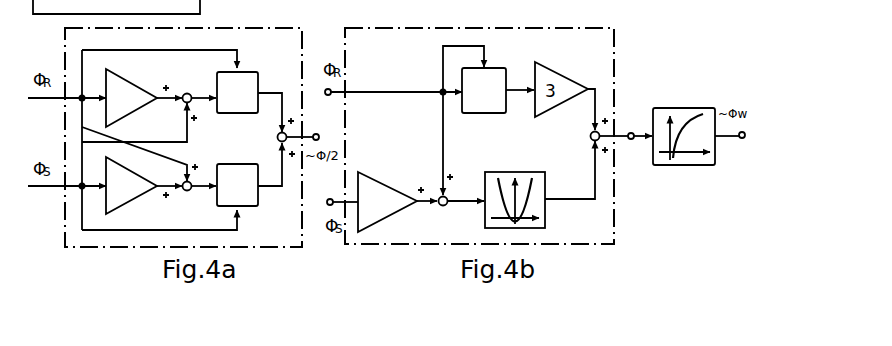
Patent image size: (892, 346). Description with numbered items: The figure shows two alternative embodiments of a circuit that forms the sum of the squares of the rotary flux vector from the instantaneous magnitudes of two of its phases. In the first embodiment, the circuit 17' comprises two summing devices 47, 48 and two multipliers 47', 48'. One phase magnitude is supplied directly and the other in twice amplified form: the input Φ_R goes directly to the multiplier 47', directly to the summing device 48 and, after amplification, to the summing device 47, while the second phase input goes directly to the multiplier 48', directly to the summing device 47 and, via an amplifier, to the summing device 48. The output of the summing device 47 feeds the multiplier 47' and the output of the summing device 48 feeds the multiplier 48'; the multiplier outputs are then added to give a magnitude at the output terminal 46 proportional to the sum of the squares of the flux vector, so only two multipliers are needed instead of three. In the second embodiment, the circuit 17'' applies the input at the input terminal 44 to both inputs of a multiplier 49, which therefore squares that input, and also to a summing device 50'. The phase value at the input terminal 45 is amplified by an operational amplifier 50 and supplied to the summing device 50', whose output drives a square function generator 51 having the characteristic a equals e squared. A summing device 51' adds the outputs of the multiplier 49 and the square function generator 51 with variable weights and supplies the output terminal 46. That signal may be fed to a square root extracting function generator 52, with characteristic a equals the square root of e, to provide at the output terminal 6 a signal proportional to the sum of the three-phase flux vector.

In FIG. 4A, the circuit 17' is at (183, 123).
In FIG. 4B, the circuit 17'' is at (479, 122).
In FIG. 4A, the summing device 47 is at (177, 93).
In FIG. 4A, the multiplier 47' is at (230, 87).
In FIG. 4A, the summing device 48 is at (179, 191).
In FIG. 4A, the multiplier 48' is at (230, 194).
In FIG. 4A, the output terminal 46 is at (306, 127).
In FIG. 4B, the output terminal 46 is at (620, 151).
In FIG. 4B, the input terminal 44 is at (383, 84).
In FIG. 4B, the input terminal 45 is at (339, 189).
In FIG. 4B, the multiplier 49 is at (497, 105).
In FIG. 4B, the amplifier 50 is at (387, 205).
In FIG. 4B, the summing device 50' is at (444, 212).
In FIG. 4B, the square function generator 51 is at (550, 222).
In FIG. 4B, the summing device 51' is at (585, 121).
In FIG. 4B, the square root extracting function generator 52 is at (683, 165).
In FIG. 4B, the output terminal 6 is at (731, 150).